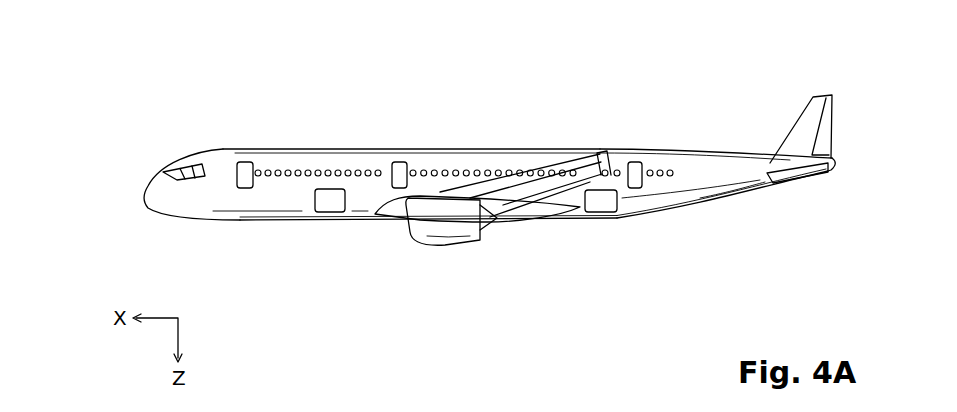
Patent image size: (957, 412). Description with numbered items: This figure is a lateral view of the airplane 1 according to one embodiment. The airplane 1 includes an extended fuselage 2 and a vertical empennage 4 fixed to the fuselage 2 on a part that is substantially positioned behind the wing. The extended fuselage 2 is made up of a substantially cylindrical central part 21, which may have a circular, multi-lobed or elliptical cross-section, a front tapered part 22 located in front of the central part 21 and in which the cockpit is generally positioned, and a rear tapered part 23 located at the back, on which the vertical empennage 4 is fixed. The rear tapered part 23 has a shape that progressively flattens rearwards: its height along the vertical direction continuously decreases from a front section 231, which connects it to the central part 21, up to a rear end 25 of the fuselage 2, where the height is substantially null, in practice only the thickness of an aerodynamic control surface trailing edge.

The airplane 1 is at (493, 158).
The extended fuselage 2 is at (493, 176).
The vertical empennage 4 is at (797, 120).
The central part 21 is at (287, 202).
The front tapered part 22 is at (180, 203).
The rear tapered part 23 is at (708, 184).
The rear end 25 is at (833, 162).
The front section 231 is at (633, 158).